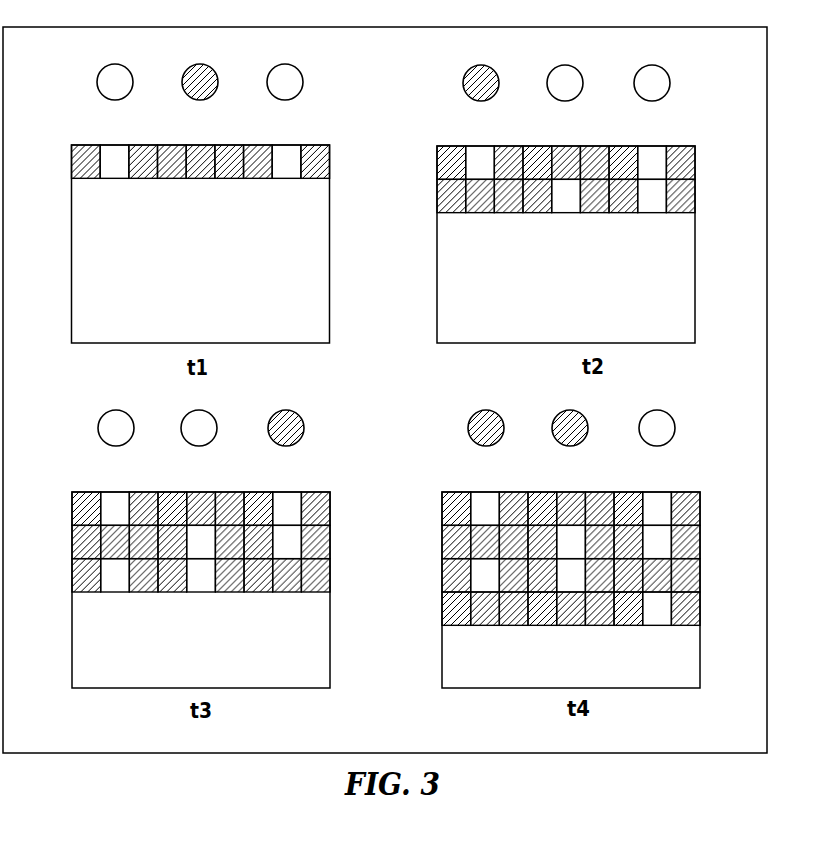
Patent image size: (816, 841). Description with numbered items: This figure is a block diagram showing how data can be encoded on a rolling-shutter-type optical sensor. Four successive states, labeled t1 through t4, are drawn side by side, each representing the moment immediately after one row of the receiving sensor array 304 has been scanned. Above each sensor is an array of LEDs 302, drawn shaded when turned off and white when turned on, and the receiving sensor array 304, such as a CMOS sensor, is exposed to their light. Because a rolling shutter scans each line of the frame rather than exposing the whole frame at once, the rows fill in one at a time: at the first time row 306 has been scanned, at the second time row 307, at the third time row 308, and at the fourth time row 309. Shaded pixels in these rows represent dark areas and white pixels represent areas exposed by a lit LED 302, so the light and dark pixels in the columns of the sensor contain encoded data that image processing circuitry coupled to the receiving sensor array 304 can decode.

The LEDs 302 is at (423, 254).
The receiving sensor array 304 is at (84, 344).
The row 306 is at (415, 335).
The row 307 is at (415, 368).
The row 308 is at (415, 575).
The row 309 is at (600, 608).